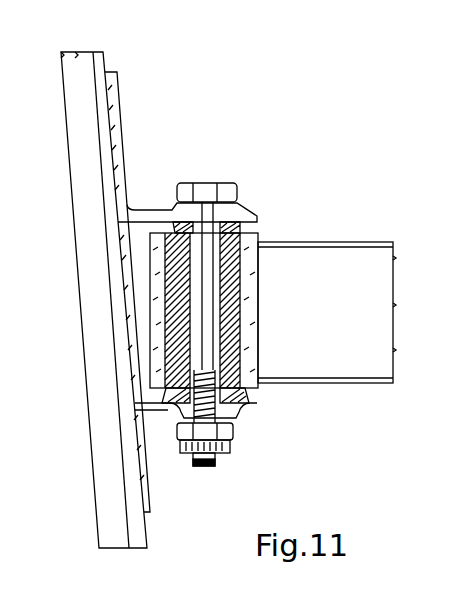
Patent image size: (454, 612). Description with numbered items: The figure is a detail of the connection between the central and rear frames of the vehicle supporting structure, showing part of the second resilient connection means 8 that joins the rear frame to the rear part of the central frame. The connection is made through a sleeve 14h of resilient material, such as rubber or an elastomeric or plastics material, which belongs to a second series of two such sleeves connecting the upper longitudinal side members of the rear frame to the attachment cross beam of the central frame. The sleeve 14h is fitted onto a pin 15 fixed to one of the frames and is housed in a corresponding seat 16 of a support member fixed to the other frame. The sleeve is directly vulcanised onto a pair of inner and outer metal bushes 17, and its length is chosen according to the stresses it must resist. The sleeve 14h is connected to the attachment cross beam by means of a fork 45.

The second resilient connection means 8 is at (263, 228).
The sleeve 14h is at (241, 358).
The pin 15 is at (204, 248).
The seat 16 is at (167, 340).
The inner and outer metal bushes 17 is at (241, 397).
The fork 45 is at (158, 210).